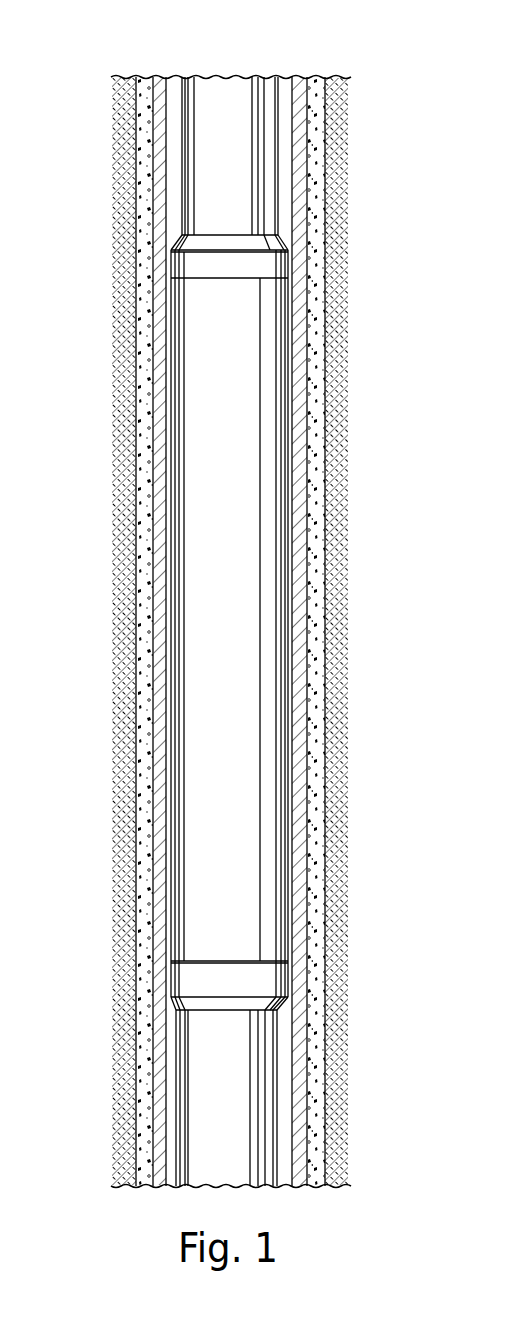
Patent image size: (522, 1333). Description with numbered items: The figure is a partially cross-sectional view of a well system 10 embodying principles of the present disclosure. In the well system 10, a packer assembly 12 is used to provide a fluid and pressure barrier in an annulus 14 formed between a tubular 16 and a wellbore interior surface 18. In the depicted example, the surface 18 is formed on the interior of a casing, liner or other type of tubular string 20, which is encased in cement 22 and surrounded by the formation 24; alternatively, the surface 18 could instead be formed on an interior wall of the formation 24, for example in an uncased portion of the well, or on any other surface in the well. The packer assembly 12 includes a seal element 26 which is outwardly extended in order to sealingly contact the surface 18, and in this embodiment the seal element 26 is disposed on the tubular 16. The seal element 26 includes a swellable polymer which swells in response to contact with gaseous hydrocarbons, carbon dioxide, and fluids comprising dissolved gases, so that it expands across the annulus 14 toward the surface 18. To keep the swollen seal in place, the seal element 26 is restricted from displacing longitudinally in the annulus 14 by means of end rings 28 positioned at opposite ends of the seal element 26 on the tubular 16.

The well system 10 is at (364, 64).
The packer assembly 12 is at (297, 422).
The annulus 14 is at (175, 203).
The tubular 16 is at (281, 163).
The wellbore interior surface 18 is at (172, 1053).
The tubular string 20 is at (156, 685).
The cement 22 is at (137, 477).
The formation 24 is at (321, 536).
The seal element 26 is at (167, 618).
The end rings 28 is at (287, 240).